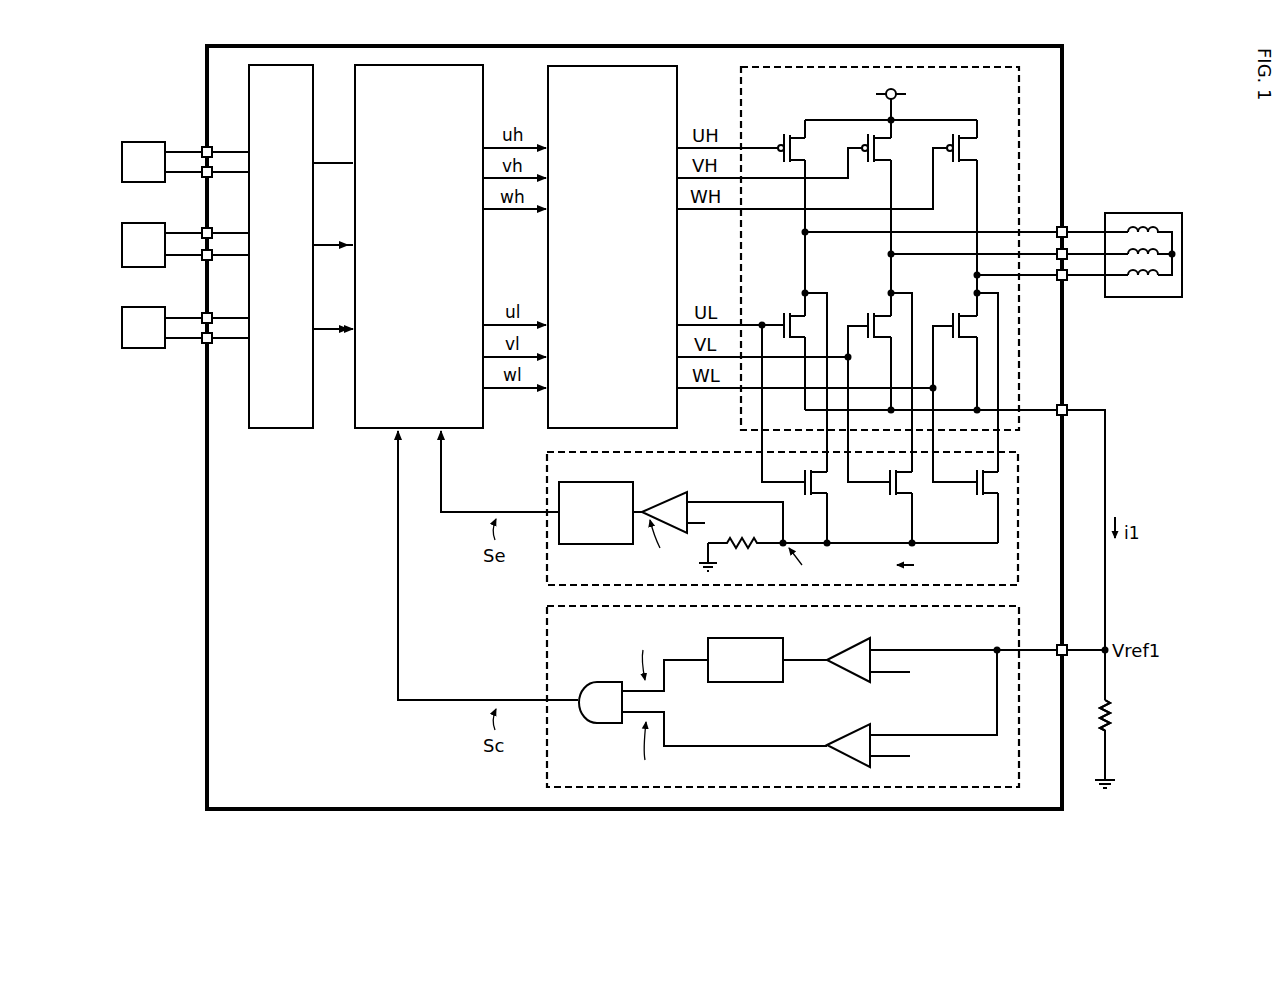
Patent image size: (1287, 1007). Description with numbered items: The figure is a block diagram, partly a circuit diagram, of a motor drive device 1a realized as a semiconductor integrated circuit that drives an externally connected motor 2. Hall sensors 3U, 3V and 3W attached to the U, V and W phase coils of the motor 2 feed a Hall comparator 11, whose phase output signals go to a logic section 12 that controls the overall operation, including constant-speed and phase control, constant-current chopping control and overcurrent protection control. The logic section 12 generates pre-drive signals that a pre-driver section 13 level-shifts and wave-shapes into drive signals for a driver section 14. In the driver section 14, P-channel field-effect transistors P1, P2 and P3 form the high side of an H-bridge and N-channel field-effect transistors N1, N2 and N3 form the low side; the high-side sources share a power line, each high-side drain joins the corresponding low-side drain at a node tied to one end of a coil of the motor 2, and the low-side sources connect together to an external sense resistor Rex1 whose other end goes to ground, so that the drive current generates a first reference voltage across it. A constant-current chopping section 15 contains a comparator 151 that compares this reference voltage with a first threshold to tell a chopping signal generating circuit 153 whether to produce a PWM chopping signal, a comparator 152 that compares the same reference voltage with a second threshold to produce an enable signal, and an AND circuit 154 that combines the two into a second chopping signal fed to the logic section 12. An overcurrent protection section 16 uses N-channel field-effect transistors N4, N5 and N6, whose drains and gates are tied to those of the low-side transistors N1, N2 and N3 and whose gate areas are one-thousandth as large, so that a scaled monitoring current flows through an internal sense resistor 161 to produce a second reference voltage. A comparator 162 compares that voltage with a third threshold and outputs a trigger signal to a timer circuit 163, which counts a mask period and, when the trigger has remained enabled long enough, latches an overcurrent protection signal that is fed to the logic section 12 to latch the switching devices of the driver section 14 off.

The motor drive device 1a is at (1064, 140).
The motor 2 is at (1147, 213).
The Hall sensor 3U is at (143, 142).
The Hall sensor 3V is at (143, 223).
The Hall sensor 3W is at (143, 307).
The Hall comparator 11 is at (313, 97).
The logic section 12 is at (483, 97).
The pre-driver section 13 is at (677, 97).
The driver section 14 is at (1019, 97).
The constant-current chopping section 15 is at (547, 654).
The overcurrent protection section 16 is at (547, 480).
The comparator 151 is at (840, 648).
The comparator 152 is at (848, 722).
The chopping signal generating circuit 153 is at (745, 682).
The AND circuit 154 is at (602, 682).
The sense resistor 161 is at (746, 558).
The comparator 162 is at (668, 497).
The timer circuit 163 is at (598, 482).
The P-channel field-effect transistor P1 is at (782, 140).
The P-channel field-effect transistor P2 is at (866, 140).
The P-channel field-effect transistor P3 is at (951, 140).
The N-channel field-effect transistor N1 is at (782, 319).
The N-channel field-effect transistor N2 is at (866, 319).
The N-channel field-effect transistor N3 is at (951, 319).
The N-channel field-effect transistor N4 is at (803, 494).
The N-channel field-effect transistor N5 is at (889, 494).
The N-channel field-effect transistor N6 is at (976, 494).
The sense resistor Rex1 is at (1113, 716).